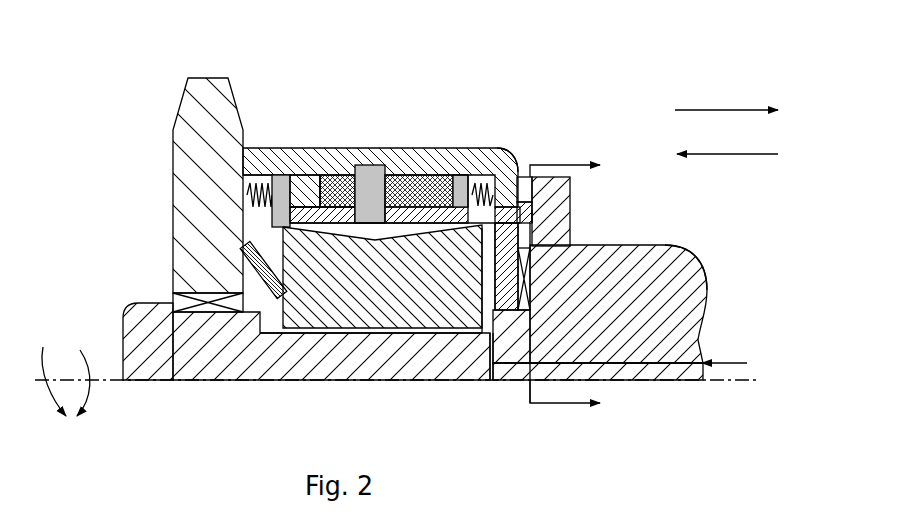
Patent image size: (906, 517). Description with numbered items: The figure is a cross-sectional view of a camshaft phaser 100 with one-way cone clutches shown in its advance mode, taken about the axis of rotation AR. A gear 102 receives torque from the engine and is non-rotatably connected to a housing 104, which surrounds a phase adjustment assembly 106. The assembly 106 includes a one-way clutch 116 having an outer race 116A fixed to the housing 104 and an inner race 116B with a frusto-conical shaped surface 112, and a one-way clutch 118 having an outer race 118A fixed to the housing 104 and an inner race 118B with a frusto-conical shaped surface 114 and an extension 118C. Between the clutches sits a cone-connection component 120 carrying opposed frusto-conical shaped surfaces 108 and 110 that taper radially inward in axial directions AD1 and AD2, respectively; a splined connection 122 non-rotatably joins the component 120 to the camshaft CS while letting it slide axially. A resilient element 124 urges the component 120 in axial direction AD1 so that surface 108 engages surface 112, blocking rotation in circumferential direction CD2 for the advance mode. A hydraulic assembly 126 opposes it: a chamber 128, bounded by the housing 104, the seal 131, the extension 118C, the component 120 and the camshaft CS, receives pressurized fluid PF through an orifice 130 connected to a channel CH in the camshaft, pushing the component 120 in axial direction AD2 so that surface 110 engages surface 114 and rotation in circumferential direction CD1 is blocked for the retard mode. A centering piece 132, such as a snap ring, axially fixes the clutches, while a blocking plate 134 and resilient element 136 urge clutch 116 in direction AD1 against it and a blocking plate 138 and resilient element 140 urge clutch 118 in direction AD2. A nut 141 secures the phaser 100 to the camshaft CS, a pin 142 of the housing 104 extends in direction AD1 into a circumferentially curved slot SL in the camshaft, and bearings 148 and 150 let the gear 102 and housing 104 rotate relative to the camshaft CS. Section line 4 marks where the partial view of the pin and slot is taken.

The camshaft phaser 100 is at (641, 80).
The gear 102 is at (207, 77).
The housing 104 is at (423, 146).
The phase adjustment assembly 106 is at (442, 352).
The frusto-conical shaped surface 108 is at (342, 237).
The frusto-conical shaped surface 110 is at (418, 230).
The frusto-conical shaped surface 112 is at (320, 205).
The frusto-conical shaped surface 114 is at (462, 176).
The one-way clutch 116 is at (338, 168).
The outer race 116A is at (282, 177).
The inner race 116B is at (286, 196).
The one-way clutch 118 is at (405, 170).
The outer race 118A is at (424, 222).
The inner race 118B is at (392, 242).
The extension 118C is at (456, 206).
The cone-connection component 120 is at (370, 165).
The splined connection 122 is at (363, 340).
The resilient element 124 is at (258, 273).
The hydraulic assembly 126 is at (511, 254).
The chamber 128 is at (480, 278).
The orifice 130 is at (492, 312).
The seal 131 is at (518, 223).
The centering piece 132 is at (376, 232).
The blocking plate 134 is at (282, 176).
The resilient element 136 is at (250, 212).
The blocking plate 138 is at (442, 195).
The resilient element 140 is at (516, 208).
The nut 141 is at (122, 314).
The pin 142 is at (520, 191).
The bearing 148 is at (176, 303).
The bearing 150 is at (523, 298).
The section line 4- 4 is at (576, 284).
The axis of rotation AR is at (750, 381).
The axial direction AD1 is at (707, 110).
The axial direction AD2 is at (727, 154).
The circumferential direction CD1 is at (86, 400).
The circumferential direction CD2 is at (44, 369).
The camshaft CS is at (678, 245).
The channel CH is at (608, 362).
The pressurized fluid PF is at (718, 363).
The slot SL is at (533, 216).